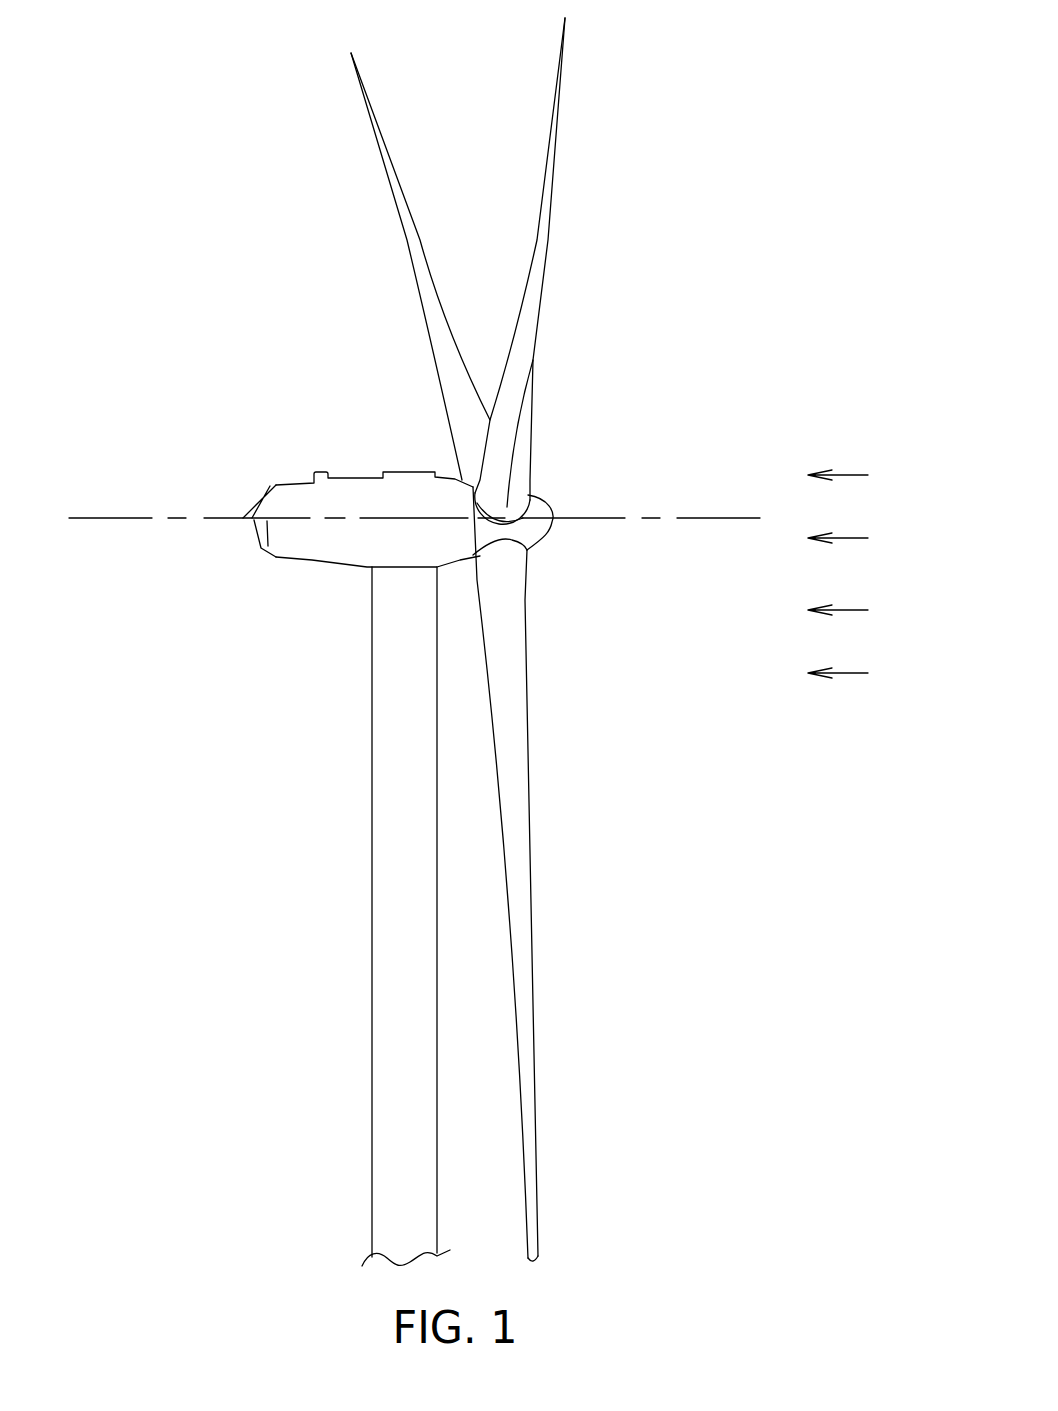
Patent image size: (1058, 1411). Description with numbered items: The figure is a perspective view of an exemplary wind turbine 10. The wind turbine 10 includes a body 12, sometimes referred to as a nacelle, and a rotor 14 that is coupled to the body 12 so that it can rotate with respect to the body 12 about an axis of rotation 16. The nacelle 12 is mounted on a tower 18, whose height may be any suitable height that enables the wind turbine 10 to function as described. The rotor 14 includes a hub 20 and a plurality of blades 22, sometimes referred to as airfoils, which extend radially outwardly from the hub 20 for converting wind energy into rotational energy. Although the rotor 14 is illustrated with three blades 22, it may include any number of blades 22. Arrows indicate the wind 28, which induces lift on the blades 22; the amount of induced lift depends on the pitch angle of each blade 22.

The wind turbine 10 is at (468, 642).
The body 12 is at (318, 562).
The rotor 14 is at (499, 639).
The axis of rotation 16 is at (702, 518).
The tower 18 is at (372, 860).
The hub 20 is at (547, 533).
The blades 22 is at (388, 140).
The wind 28 is at (842, 462).